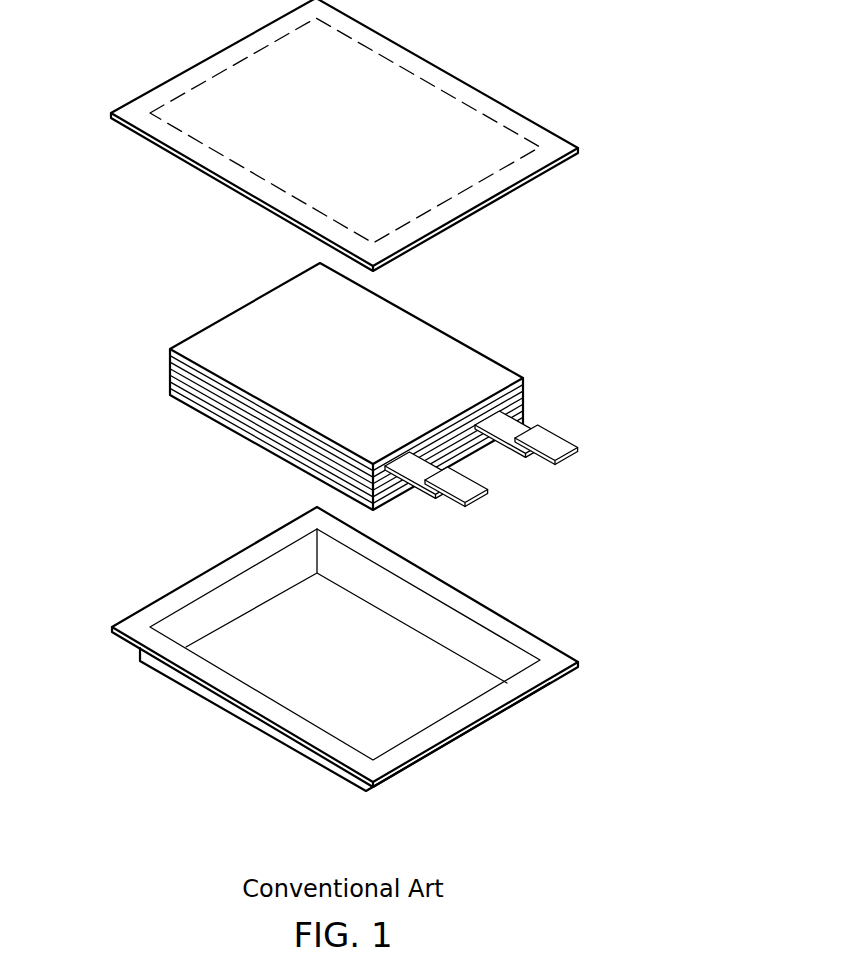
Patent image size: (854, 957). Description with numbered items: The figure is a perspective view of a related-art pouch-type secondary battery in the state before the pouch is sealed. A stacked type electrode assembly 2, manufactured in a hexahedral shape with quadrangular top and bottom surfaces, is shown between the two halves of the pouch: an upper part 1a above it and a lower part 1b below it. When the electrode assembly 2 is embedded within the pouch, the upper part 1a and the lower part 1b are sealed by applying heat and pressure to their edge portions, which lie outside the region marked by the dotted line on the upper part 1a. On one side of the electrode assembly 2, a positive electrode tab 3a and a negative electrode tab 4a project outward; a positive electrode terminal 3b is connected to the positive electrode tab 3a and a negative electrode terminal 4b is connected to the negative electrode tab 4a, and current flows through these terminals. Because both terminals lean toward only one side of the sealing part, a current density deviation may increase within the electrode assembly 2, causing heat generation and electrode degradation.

The upper part of the pouch 1a is at (473, 98).
The lower part of the pouch 1b is at (498, 623).
The stacked type electrode assembly 2 is at (430, 337).
The positive electrode tab 3a is at (415, 472).
The positive electrode terminal 3b is at (475, 490).
The negative electrode tab 4a is at (520, 427).
The negative electrode terminal 4b is at (560, 450).